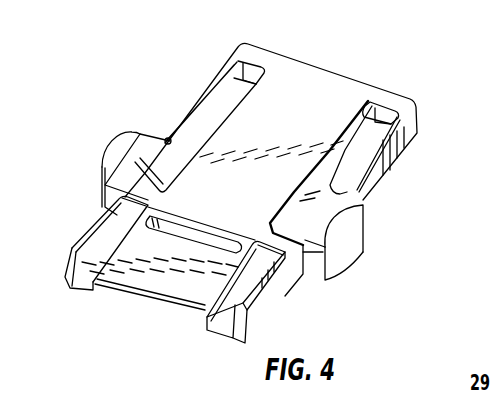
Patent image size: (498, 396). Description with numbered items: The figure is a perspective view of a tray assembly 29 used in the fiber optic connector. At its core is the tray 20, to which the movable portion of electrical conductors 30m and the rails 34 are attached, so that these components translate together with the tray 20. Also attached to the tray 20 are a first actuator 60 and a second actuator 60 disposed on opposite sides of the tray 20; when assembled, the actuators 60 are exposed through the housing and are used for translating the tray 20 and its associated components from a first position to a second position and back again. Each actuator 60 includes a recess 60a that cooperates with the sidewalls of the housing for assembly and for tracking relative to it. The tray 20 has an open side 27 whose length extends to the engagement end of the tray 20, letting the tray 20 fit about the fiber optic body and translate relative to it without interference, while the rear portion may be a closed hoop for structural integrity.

The tray 20 is at (287, 83).
The open side 27 is at (148, 297).
The tray assembly 29 is at (387, 73).
The portion of electrical conductors 30m is at (65, 268).
The rails 34 is at (88, 292).
The actuators 60 is at (114, 148).
The recesses 60a is at (120, 172).